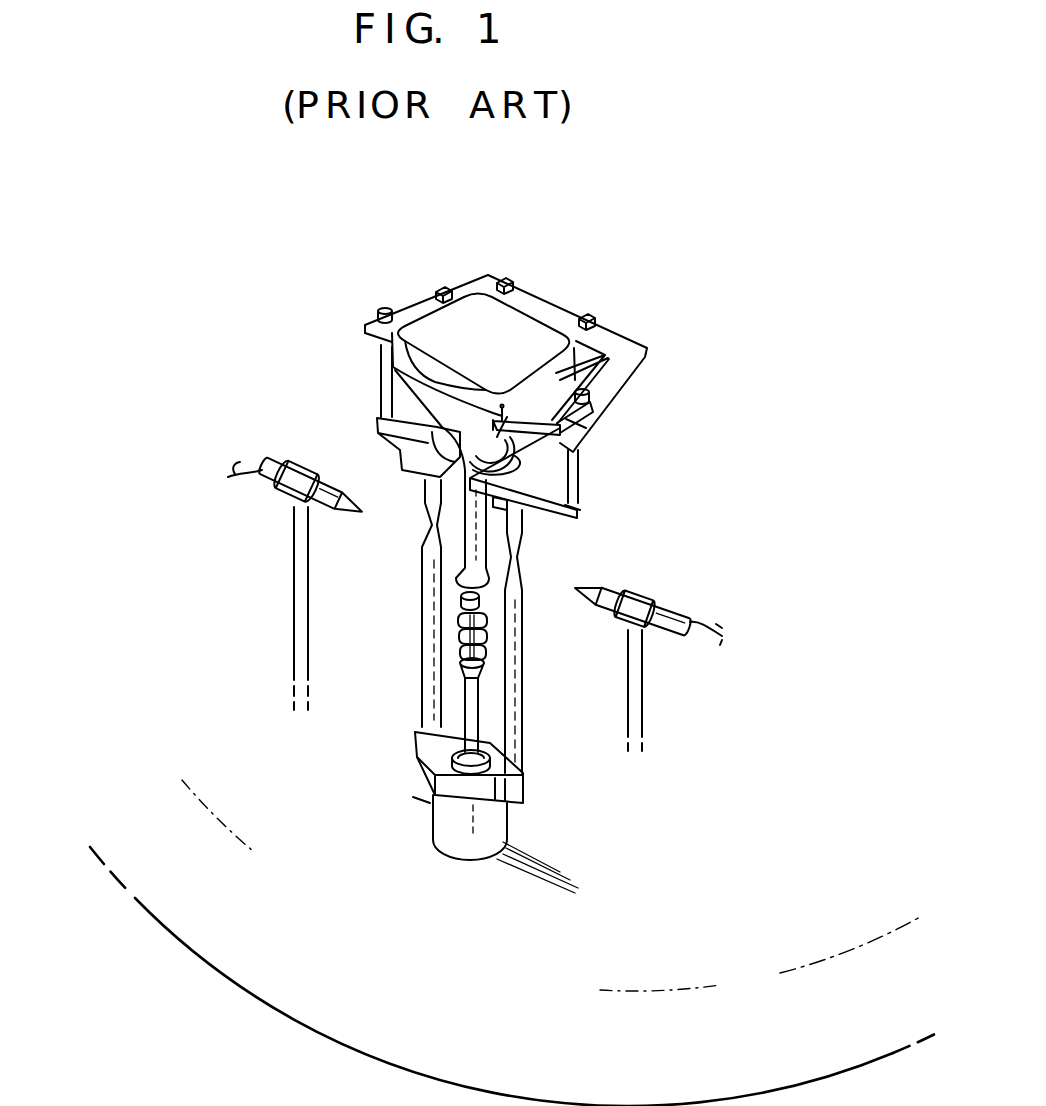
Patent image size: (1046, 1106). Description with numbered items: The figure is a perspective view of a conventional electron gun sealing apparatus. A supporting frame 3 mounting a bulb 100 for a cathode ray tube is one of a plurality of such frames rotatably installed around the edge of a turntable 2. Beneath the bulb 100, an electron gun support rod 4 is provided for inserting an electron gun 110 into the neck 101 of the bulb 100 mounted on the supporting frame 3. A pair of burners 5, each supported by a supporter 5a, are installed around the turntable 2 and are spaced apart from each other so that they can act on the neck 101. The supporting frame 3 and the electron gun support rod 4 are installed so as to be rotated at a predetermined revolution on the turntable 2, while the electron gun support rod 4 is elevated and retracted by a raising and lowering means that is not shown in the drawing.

The bulb 100 is at (540, 317).
The supporting frame 3 is at (362, 330).
The neck 101 is at (487, 553).
The burner 5 is at (620, 587).
The supporter 5a is at (638, 663).
The electron gun 110 is at (462, 628).
The electron gun support rod 4 is at (430, 740).
The turntable 2 is at (602, 1040).